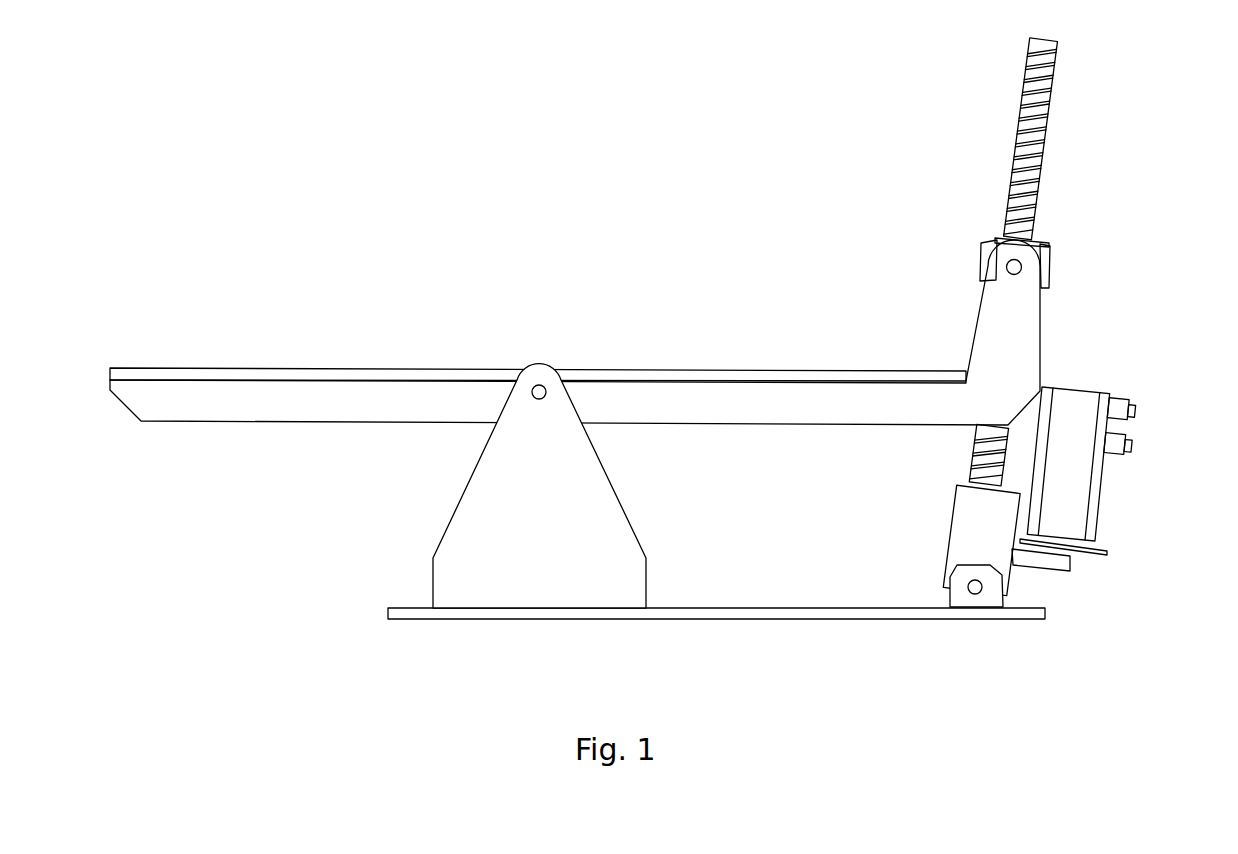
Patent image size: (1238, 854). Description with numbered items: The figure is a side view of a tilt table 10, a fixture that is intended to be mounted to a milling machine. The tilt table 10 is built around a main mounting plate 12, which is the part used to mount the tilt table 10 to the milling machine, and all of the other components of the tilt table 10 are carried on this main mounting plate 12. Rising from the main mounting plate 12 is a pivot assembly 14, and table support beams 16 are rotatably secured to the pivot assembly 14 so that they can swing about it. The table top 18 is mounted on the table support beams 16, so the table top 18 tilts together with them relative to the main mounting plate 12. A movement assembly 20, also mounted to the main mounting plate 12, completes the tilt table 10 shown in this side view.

The tilt table 10 is at (533, 165).
The main mounting plate 12 is at (397, 610).
The pivot assembly 14 is at (663, 503).
The table support beams 16 is at (179, 409).
The table top 18 is at (187, 373).
The movement assembly 20 is at (1165, 312).